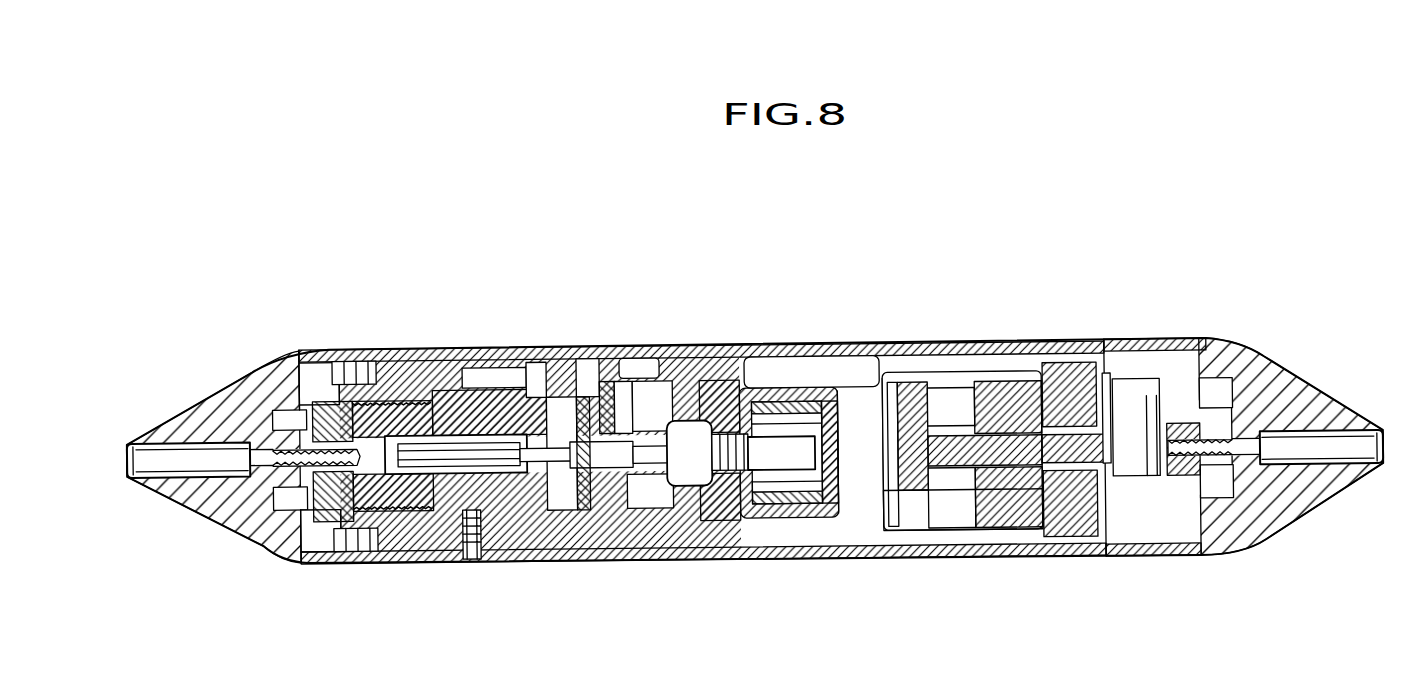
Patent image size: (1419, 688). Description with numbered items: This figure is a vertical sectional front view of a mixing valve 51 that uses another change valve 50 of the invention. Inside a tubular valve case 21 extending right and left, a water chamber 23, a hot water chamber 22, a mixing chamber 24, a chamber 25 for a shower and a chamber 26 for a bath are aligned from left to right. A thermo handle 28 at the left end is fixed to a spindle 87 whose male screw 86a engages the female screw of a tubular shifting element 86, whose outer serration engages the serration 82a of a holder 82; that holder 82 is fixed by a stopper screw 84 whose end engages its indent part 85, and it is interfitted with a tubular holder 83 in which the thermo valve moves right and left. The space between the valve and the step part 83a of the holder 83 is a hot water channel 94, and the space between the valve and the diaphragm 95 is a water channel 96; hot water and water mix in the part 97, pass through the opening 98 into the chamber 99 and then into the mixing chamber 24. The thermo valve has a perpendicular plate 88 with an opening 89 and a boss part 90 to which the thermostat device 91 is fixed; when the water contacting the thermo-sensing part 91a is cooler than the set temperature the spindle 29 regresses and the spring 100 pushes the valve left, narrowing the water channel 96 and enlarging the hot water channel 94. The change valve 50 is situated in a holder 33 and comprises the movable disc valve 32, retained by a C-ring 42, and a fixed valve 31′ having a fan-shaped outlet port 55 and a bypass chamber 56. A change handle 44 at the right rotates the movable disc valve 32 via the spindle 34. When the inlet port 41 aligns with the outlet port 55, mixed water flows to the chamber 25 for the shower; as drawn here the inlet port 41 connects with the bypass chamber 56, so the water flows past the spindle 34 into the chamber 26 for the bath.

The mixing valve 51 is at (1139, 296).
The thermo handle 28 is at (233, 400).
The change handle 44 is at (1277, 387).
The valve case 21 is at (462, 360).
The spindle 87 is at (325, 505).
The male screw 86a is at (360, 400).
The tubular shifting element 86 is at (370, 505).
The stopper screw 84 is at (474, 512).
The holder 82 is at (474, 375).
The serration 82a is at (514, 375).
The water chamber 23 is at (558, 368).
The diaphragm 95 is at (580, 368).
The water channel 96 is at (608, 380).
The perpendicular plate 88 is at (633, 368).
The hot water chamber 22 is at (680, 372).
The opening 89 is at (664, 380).
The holder 83 is at (706, 380).
The step part 83a is at (686, 520).
The mixing part 97 is at (755, 388).
The opening 98 is at (765, 400).
The chamber 99 is at (805, 492).
The spring 100 is at (826, 506).
The mixing chamber 24 is at (828, 368).
The indent part 85 is at (478, 520).
The spindle 29 is at (555, 512).
The boss part 90 is at (590, 510).
The thermostat device 91 is at (708, 490).
The hot water channel 94 is at (685, 487).
The thermo-sensing part 91a is at (787, 443).
The inlet port 41 is at (879, 483).
The change valve 50 is at (862, 410).
The movable disc valve 32 is at (900, 395).
The outlet port 55 is at (946, 378).
The chamber for shower 25 is at (970, 392).
The bypass chamber 56 is at (946, 500).
The C-ring 42 is at (872, 505).
The holder 33 is at (908, 500).
The chamber for bath 26 is at (1030, 375).
The fixed valve 31′ is at (985, 530).
The spindle 34 is at (1034, 458).